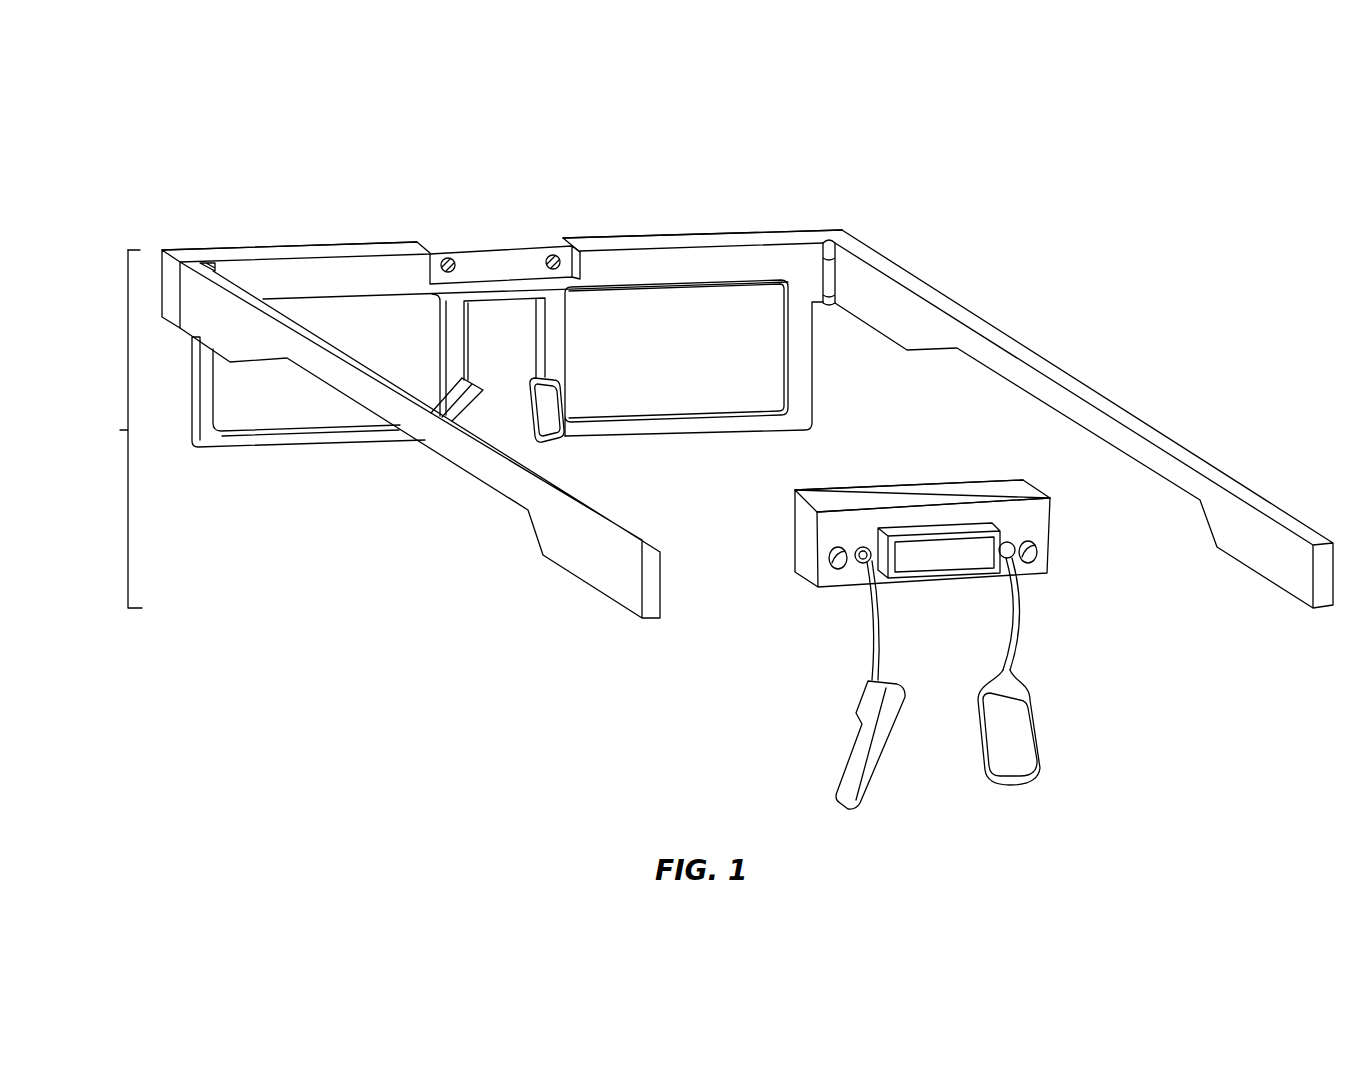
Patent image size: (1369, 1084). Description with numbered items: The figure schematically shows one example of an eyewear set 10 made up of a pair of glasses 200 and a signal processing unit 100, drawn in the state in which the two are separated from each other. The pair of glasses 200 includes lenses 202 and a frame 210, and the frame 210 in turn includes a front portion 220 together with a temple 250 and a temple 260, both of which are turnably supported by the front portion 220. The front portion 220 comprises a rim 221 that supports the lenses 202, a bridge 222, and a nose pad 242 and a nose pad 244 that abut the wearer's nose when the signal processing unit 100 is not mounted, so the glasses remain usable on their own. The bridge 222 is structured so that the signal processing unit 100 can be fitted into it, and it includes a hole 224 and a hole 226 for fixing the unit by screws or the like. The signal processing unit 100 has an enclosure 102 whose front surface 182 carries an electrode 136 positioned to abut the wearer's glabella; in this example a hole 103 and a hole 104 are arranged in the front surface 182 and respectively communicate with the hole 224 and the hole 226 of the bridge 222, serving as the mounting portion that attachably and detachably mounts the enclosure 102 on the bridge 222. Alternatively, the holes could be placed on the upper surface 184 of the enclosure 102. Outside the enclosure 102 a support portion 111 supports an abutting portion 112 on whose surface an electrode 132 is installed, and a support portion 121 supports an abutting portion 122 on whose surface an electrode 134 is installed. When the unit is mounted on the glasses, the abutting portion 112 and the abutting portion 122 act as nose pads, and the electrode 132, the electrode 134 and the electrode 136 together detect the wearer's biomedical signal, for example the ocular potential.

The eyewear set 10 is at (170, 167).
The pair of glasses 200 is at (210, 244).
The front portion 220 is at (307, 238).
The bridge 222 is at (505, 231).
The hole 224 is at (445, 256).
The hole 226 is at (555, 250).
The rim 221 is at (814, 382).
The lenses 202 is at (283, 410).
The nose pad 242 is at (503, 371).
The nose pad 244 is at (553, 445).
The temple 250 is at (540, 534).
The temple 260 is at (1123, 409).
The frame 210 is at (101, 429).
The signal processing unit 100 is at (840, 482).
The upper surface 184 is at (926, 501).
The enclosure 102 is at (1052, 512).
The front surface 182 is at (1033, 528).
The hole 103 is at (826, 553).
The hole 104 is at (1040, 558).
The electrode 136 is at (930, 558).
The support portion 111 is at (871, 636).
The abutting portion 112 is at (846, 765).
The electrode 132 is at (878, 777).
The support portion 121 is at (1024, 628).
The abutting portion 122 is at (1037, 727).
The electrode 134 is at (997, 738).